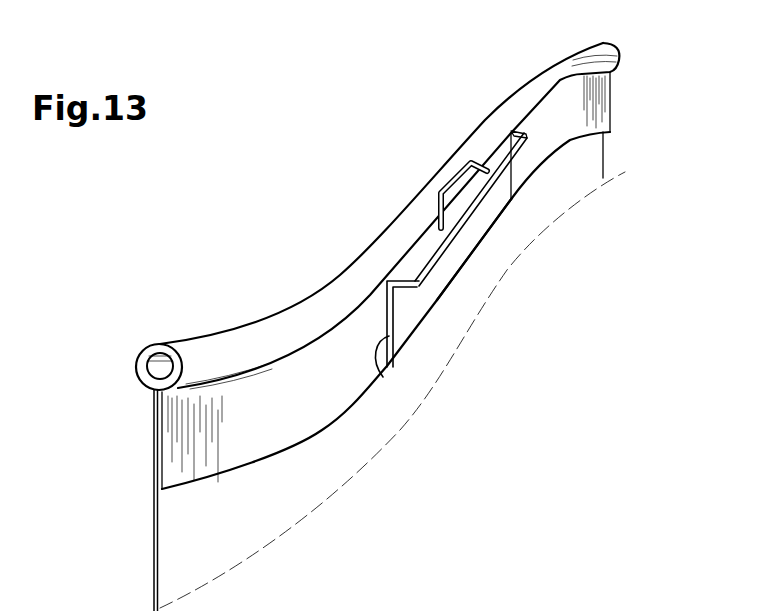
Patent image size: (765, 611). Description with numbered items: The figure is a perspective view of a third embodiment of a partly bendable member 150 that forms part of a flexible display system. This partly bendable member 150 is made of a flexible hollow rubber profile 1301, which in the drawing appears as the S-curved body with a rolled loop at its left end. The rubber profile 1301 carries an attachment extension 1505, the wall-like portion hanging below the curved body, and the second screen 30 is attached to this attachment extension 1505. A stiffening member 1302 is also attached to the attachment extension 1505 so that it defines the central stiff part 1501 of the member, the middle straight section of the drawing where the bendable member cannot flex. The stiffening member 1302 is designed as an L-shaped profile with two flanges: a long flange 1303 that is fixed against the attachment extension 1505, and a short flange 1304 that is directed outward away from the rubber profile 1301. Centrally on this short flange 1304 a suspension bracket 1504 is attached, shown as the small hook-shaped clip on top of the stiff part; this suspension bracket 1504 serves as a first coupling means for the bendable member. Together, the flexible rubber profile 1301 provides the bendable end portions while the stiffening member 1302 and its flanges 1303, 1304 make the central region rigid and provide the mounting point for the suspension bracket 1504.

The partly bendable member 150 is at (333, 218).
The flexible hollow rubber profile 1301 is at (267, 322).
The central stiff part 1501 is at (420, 203).
The suspension bracket 1504 is at (463, 163).
The stiffening member 1302 is at (465, 242).
The short flange 1304 is at (407, 287).
The long flange 1303 is at (383, 377).
The attachment extension 1505 is at (237, 445).
The second screen 30 is at (587, 167).